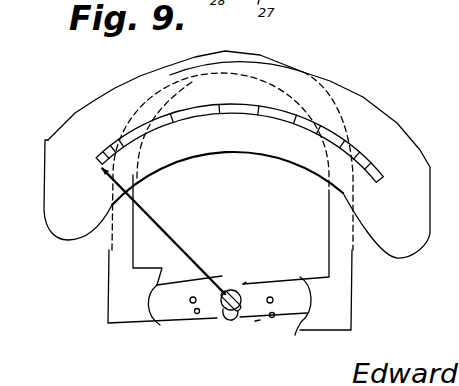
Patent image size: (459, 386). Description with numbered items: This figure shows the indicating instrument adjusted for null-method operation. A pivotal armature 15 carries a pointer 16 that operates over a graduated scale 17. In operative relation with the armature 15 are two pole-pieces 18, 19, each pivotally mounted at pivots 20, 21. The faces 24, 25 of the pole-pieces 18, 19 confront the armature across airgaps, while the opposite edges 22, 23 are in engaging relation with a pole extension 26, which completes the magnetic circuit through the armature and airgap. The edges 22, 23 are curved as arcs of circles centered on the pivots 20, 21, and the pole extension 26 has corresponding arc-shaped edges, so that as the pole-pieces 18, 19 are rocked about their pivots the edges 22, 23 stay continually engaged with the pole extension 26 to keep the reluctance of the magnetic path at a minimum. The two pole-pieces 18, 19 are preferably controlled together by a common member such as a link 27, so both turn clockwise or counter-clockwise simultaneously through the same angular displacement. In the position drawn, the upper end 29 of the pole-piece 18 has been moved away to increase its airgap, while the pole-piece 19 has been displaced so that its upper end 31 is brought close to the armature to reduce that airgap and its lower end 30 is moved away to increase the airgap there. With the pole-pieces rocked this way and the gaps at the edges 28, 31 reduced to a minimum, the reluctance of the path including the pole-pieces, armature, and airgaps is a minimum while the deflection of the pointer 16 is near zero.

The pivotal armature 15 is at (228, 322).
The pointer 16 is at (157, 216).
The graduated scale 17 is at (374, 158).
The pole-piece 18 is at (178, 305).
The pole-piece 19 is at (297, 311).
The pivot 20 is at (192, 297).
The pivot 21 is at (270, 297).
The edge 22 is at (160, 283).
The edge 23 is at (291, 310).
The face 24 is at (212, 321).
The face 25 is at (250, 322).
The pole extension 26 is at (117, 250).
The link 27 is at (228, 322).
The edge 28 is at (219, 318).
The upper end 29 is at (220, 278).
The lower end 30 is at (258, 322).
The upper end 31 is at (245, 283).